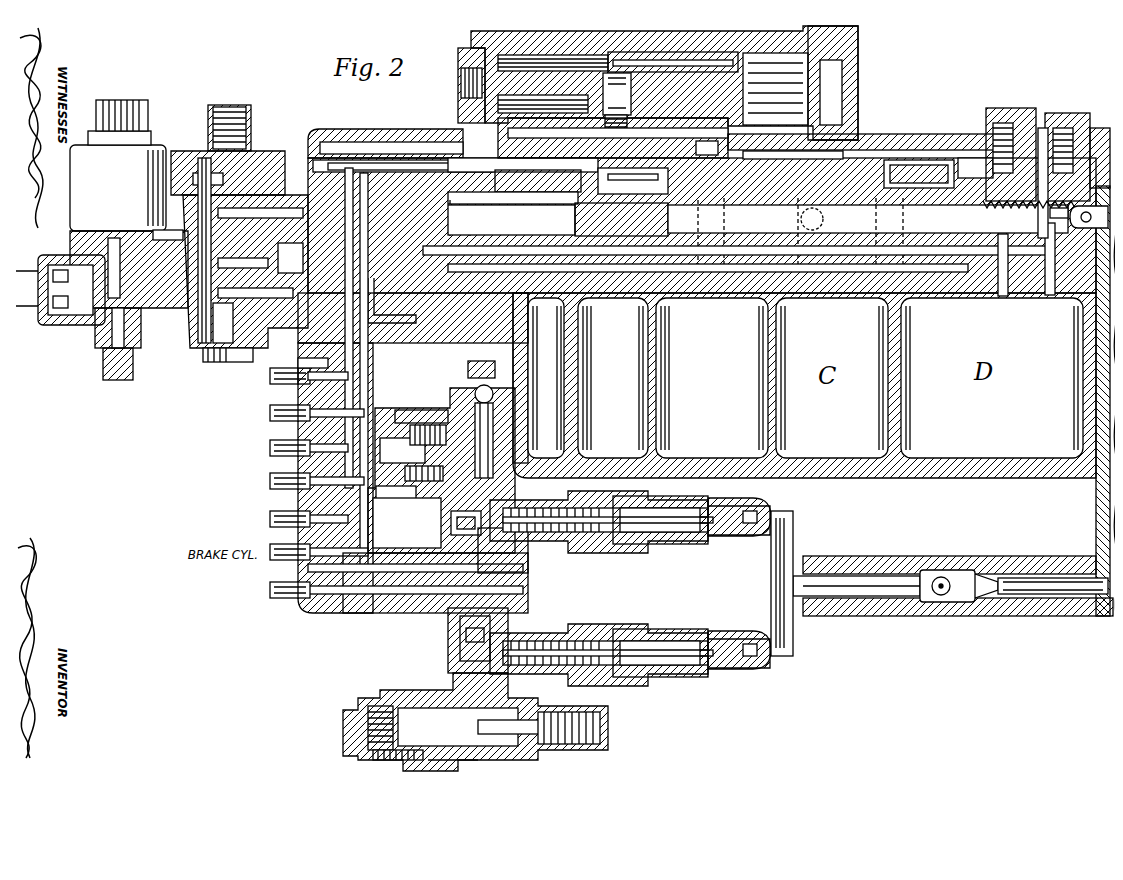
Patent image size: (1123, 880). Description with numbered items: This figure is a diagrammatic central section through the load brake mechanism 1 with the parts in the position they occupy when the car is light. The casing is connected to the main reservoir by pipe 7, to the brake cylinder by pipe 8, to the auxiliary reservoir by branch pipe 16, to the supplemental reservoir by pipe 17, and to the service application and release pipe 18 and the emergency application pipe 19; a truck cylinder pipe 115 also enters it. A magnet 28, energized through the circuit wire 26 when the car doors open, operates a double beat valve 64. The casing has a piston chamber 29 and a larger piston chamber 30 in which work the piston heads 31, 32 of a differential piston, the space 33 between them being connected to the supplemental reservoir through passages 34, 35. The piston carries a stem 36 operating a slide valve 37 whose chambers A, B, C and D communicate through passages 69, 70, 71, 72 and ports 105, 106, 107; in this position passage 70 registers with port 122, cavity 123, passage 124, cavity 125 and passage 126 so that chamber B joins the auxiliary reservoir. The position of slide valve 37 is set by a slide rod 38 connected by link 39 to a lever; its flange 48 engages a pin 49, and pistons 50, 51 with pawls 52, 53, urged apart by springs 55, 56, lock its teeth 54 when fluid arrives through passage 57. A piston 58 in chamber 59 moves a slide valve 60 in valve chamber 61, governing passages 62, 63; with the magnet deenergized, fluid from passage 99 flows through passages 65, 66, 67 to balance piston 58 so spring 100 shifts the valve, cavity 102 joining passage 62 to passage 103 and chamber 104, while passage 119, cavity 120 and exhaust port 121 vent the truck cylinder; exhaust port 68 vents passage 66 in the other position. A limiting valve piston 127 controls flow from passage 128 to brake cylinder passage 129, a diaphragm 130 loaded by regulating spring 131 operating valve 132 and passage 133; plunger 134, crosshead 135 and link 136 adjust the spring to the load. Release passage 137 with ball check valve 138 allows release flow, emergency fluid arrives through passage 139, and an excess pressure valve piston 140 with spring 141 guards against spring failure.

The load brake mechanism 1 is at (925, 470).
The pipe 7 is at (778, 214).
The pipe 8 is at (270, 550).
The branch pipe 16 is at (268, 479).
The pipe 17 is at (268, 445).
The service application and release pipe 18 is at (270, 515).
The emergency application pipe 19 is at (275, 592).
The circuit wire 26 is at (15, 290).
The magnet 28 is at (93, 143).
The piston chamber 29 is at (505, 47).
The larger piston chamber 30 is at (835, 45).
The piston head 31 is at (462, 42).
The piston head 32 is at (745, 48).
The space 33 is at (648, 47).
The passage 34 is at (345, 380).
The passage 35 is at (325, 133).
The stem 36 is at (624, 88).
The slide valve 37 is at (878, 128).
The slide rod 38 is at (995, 286).
The link 39 is at (1084, 204).
The flange or abutment 48 is at (567, 200).
The pin 49 is at (588, 170).
The piston 50 is at (990, 110).
The piston 51 is at (1060, 115).
The pawl 52 is at (985, 200).
The pawl 53 is at (1050, 203).
The teeth 54 is at (1030, 200).
The spring 55 is at (975, 158).
The spring 56 is at (1092, 135).
The passage 57 is at (1041, 286).
The piston 58 is at (245, 165).
The piston chamber 59 is at (198, 162).
The slide valve 60 is at (182, 318).
The valve chamber 61 is at (194, 348).
The passage 62 is at (415, 134).
The passage 63 is at (834, 95).
The double beat valve 64 is at (86, 322).
The passage 65 is at (120, 372).
The passage 66 is at (128, 226).
The passage 67 is at (178, 150).
The atmospheric exhaust port 68 is at (170, 225).
The passage 69 is at (675, 292).
The passage 70 is at (590, 292).
The passage 71 is at (885, 165).
The passage 72 is at (943, 265).
The passage 99 is at (292, 352).
The spring 100 is at (225, 120).
The cavity 102 is at (240, 276).
The passage 103 is at (508, 312).
The chamber 104 is at (508, 343).
The port 105 is at (848, 143).
The port 106 is at (495, 153).
The port 107 is at (712, 134).
The pipe 115 is at (268, 407).
The passage 119 is at (360, 398).
The cavity 120 is at (238, 256).
The exhaust port 121 is at (290, 252).
The port 122 is at (465, 192).
The extended cavity 123 is at (395, 152).
The passage 124 is at (410, 195).
The cavity 125 is at (238, 212).
The passage 126 is at (405, 428).
The valve piston 127 is at (438, 474).
The passage 128 is at (405, 527).
The passage 129 is at (500, 550).
The diaphragm 130 is at (530, 500).
The regulating spring 131 is at (625, 541).
The valve 132 is at (443, 522).
The passage 133 is at (385, 492).
The plunger 134 is at (698, 530).
The crosshead 135 is at (768, 572).
The link 136 is at (428, 400).
The release passage 137 is at (486, 430).
The ball check valve 138 is at (486, 386).
The passage 139 is at (360, 592).
The valve piston 140 is at (548, 748).
The spring 141 is at (612, 683).